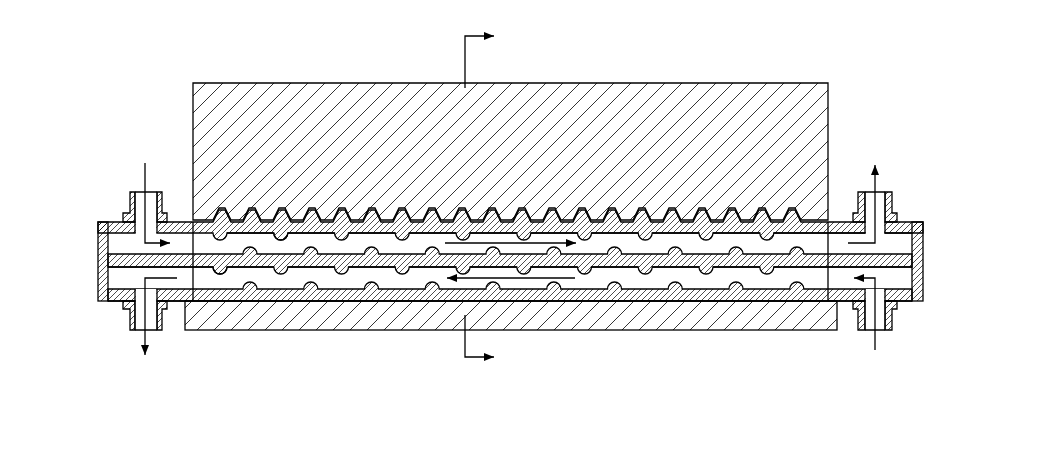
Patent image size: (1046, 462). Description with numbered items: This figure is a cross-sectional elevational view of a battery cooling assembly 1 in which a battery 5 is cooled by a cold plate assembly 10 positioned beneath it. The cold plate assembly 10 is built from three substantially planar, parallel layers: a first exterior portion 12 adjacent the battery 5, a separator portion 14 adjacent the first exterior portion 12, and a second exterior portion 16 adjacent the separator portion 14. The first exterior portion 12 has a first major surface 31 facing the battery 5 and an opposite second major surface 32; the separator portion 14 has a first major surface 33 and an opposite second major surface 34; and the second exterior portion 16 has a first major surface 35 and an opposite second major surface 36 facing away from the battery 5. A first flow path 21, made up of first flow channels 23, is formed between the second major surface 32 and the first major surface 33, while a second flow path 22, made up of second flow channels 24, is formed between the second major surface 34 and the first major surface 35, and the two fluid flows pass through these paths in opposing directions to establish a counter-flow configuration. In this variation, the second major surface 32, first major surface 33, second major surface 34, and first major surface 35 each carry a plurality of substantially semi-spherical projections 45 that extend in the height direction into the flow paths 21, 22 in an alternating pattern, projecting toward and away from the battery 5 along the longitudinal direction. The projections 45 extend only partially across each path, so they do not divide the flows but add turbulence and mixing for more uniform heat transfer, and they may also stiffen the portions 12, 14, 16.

The battery cooling assembly 1 is at (170, 70).
The battery 5 is at (302, 105).
The cold plate assembly 10 is at (78, 218).
The first exterior portion 12 is at (903, 222).
The separator portion 14 is at (923, 259).
The second exterior portion 16 is at (905, 300).
The first flow path 21 is at (468, 141).
The first flow channels 23 is at (421, 243).
The second flow path 22 is at (459, 330).
The second flow channels 24 is at (355, 278).
The first major surface 31 is at (565, 208).
The second major surface 32 is at (693, 238).
The first major surface 33 is at (603, 253).
The second major surface 34 is at (723, 268).
The first major surface 35 is at (655, 292).
The second major surface 36 is at (770, 302).
The projections 45 is at (280, 240).